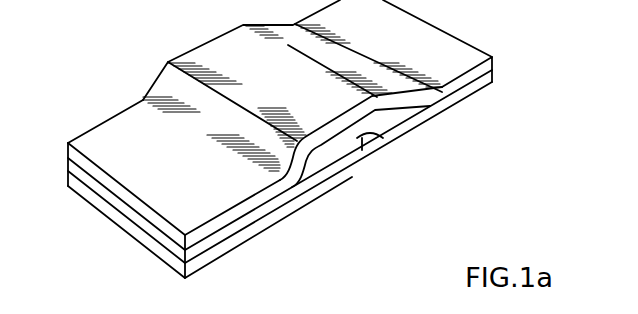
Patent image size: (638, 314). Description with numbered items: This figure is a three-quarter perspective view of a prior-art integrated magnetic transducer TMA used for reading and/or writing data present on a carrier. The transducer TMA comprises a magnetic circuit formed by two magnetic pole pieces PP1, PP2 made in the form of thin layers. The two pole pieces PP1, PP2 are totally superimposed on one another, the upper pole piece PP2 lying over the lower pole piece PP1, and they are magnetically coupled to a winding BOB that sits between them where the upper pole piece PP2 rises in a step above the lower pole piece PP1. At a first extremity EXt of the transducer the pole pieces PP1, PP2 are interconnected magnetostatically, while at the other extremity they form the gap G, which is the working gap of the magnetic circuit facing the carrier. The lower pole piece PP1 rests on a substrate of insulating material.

The integrated magnetic transducer TMA is at (174, 196).
The gap G is at (107, 193).
The magnetic pole piece PP1 is at (351, 174).
The magnetic pole piece PP2 is at (215, 40).
The winding BOB is at (387, 138).
The first extremity EXt is at (493, 66).